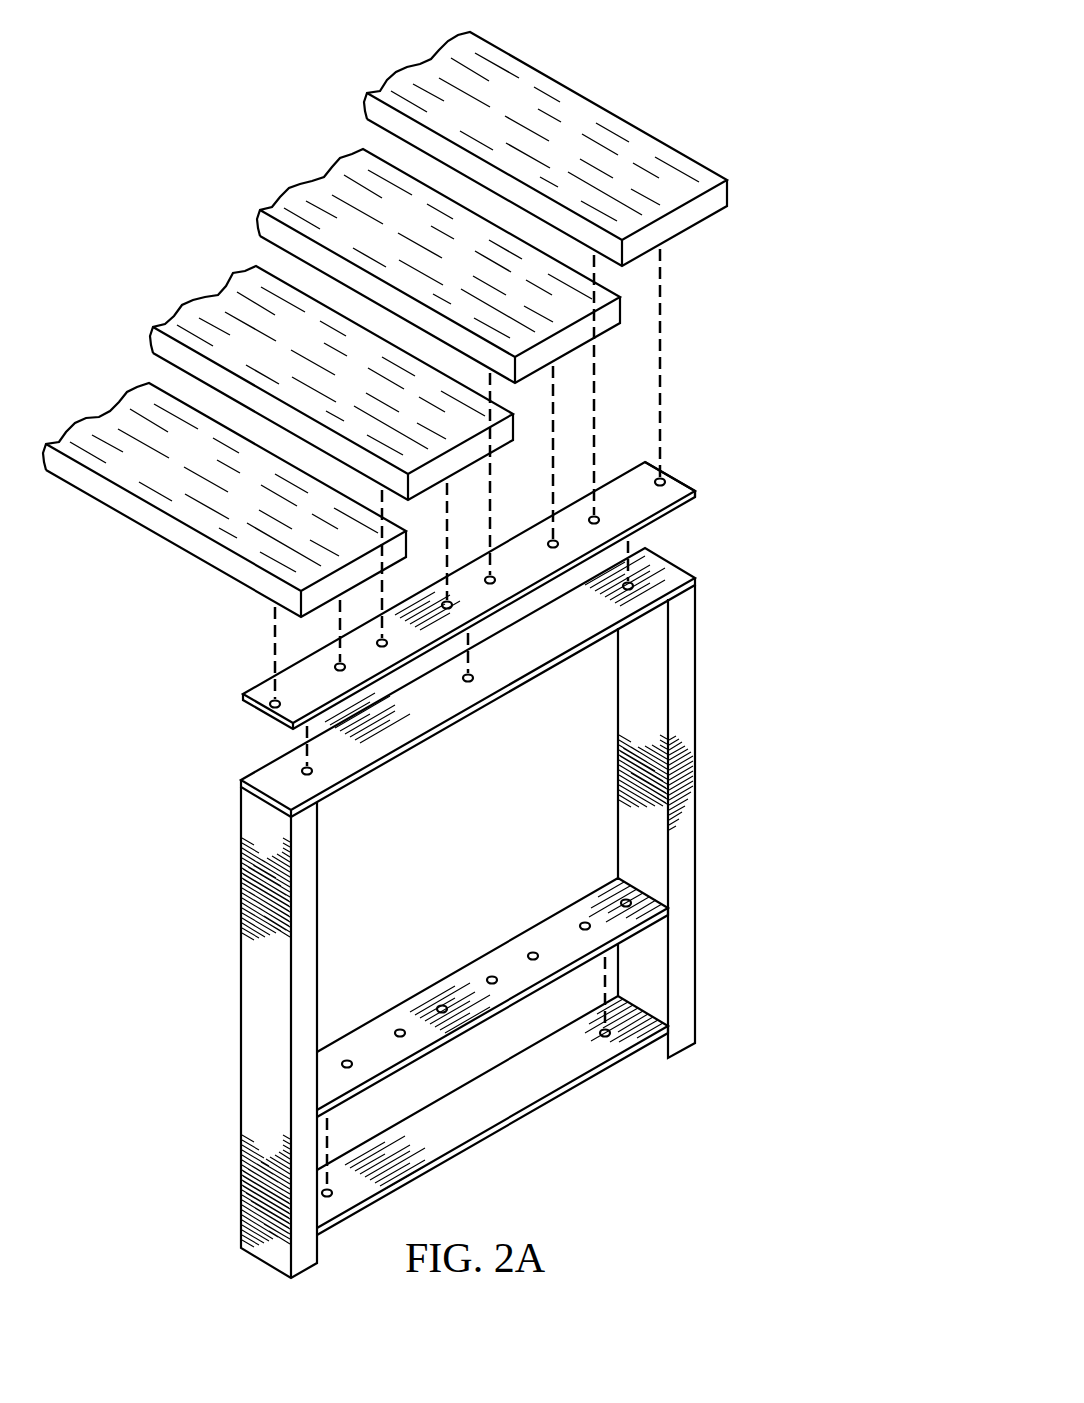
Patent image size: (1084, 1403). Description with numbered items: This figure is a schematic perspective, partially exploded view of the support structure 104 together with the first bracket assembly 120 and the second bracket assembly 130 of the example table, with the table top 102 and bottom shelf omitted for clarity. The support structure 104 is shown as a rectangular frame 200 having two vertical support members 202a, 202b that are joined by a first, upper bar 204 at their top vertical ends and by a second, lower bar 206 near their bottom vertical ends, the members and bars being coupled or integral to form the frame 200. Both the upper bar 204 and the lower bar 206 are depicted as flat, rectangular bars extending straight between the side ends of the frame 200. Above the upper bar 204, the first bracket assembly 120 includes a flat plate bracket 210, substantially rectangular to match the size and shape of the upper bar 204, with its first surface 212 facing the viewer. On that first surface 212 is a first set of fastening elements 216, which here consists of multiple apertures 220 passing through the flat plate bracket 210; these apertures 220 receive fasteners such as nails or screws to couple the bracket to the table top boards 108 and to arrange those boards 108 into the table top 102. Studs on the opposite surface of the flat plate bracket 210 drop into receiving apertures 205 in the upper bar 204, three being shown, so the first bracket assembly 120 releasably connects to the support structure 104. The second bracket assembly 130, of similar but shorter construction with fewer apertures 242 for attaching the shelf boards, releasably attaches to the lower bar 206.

The table top 102 is at (606, 78).
The support structure 104 is at (715, 718).
The table top boards 108 is at (427, 72).
The first bracket assembly 120 is at (243, 680).
The second bracket assembly 130 is at (512, 932).
The frame 200 is at (202, 991).
The vertical support member 202a is at (253, 1108).
The vertical support member 202b is at (690, 775).
The upper bar 204 is at (258, 776).
The receiving apertures 205 is at (634, 587).
The lower bar 206 is at (480, 1112).
The flat plate bracket 210 is at (537, 522).
The first surface 212 is at (640, 485).
The first set of fastening elements 216 is at (665, 481).
The apertures 220 is at (485, 522).
The apertures 242 is at (398, 1029).